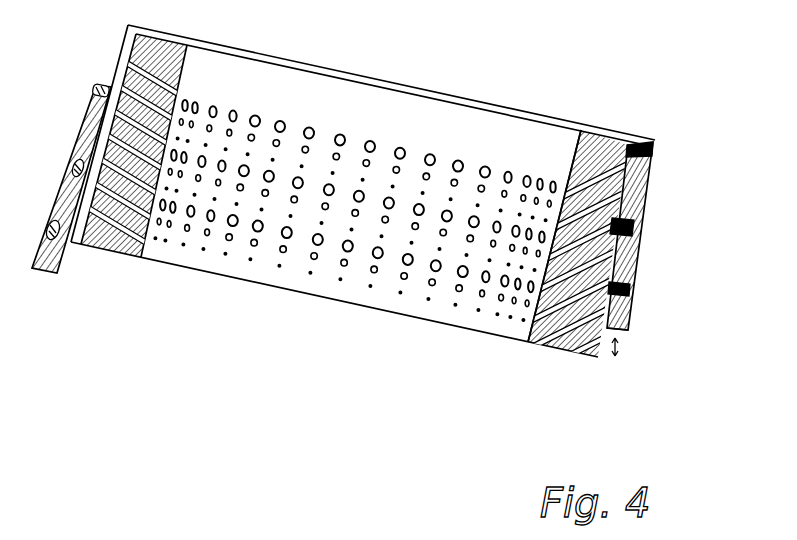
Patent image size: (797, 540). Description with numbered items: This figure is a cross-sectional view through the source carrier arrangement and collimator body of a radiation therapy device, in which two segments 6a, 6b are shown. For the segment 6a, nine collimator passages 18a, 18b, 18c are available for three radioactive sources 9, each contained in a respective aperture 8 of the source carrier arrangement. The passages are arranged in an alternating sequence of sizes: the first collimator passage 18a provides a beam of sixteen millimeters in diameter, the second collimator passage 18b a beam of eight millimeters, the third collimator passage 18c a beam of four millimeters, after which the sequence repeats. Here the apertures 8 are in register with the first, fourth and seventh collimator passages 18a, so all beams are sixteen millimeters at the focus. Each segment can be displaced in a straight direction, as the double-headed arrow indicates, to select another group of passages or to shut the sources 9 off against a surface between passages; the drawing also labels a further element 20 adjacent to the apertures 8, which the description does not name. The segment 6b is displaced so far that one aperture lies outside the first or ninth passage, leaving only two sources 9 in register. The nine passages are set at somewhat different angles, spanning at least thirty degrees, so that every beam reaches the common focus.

The segment 6a is at (633, 332).
The segment 6b is at (84, 116).
The aperture 8 is at (657, 148).
The radioactive source 9 is at (95, 90).
The first collimator passage 18a is at (566, 178).
The second collimator passage 18b is at (570, 185).
The third collimator passage 18c is at (594, 188).
The spacer 20 is at (640, 143).